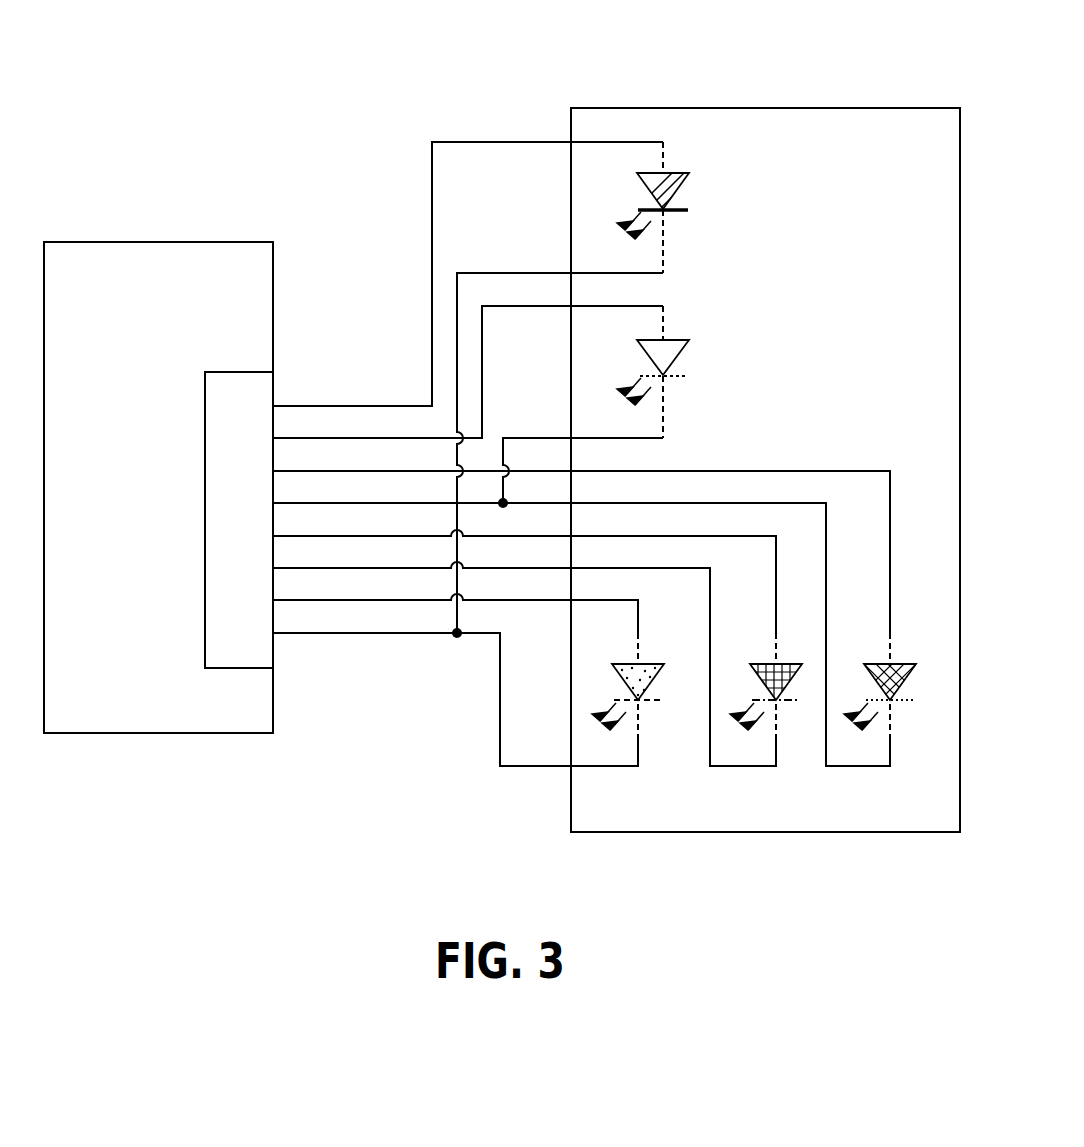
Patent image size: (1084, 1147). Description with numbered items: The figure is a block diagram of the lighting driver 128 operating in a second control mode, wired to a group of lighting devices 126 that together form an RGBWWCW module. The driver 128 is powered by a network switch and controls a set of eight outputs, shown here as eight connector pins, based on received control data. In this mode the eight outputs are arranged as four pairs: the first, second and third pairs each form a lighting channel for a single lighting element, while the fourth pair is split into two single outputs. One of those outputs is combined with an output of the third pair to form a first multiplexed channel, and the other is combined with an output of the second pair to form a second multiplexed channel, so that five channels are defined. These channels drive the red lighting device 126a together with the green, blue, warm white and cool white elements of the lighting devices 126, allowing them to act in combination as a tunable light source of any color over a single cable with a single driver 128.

The lighting driver 128 is at (148, 224).
The lighting devices 126 is at (734, 90).
The lighting device 126a is at (627, 748).